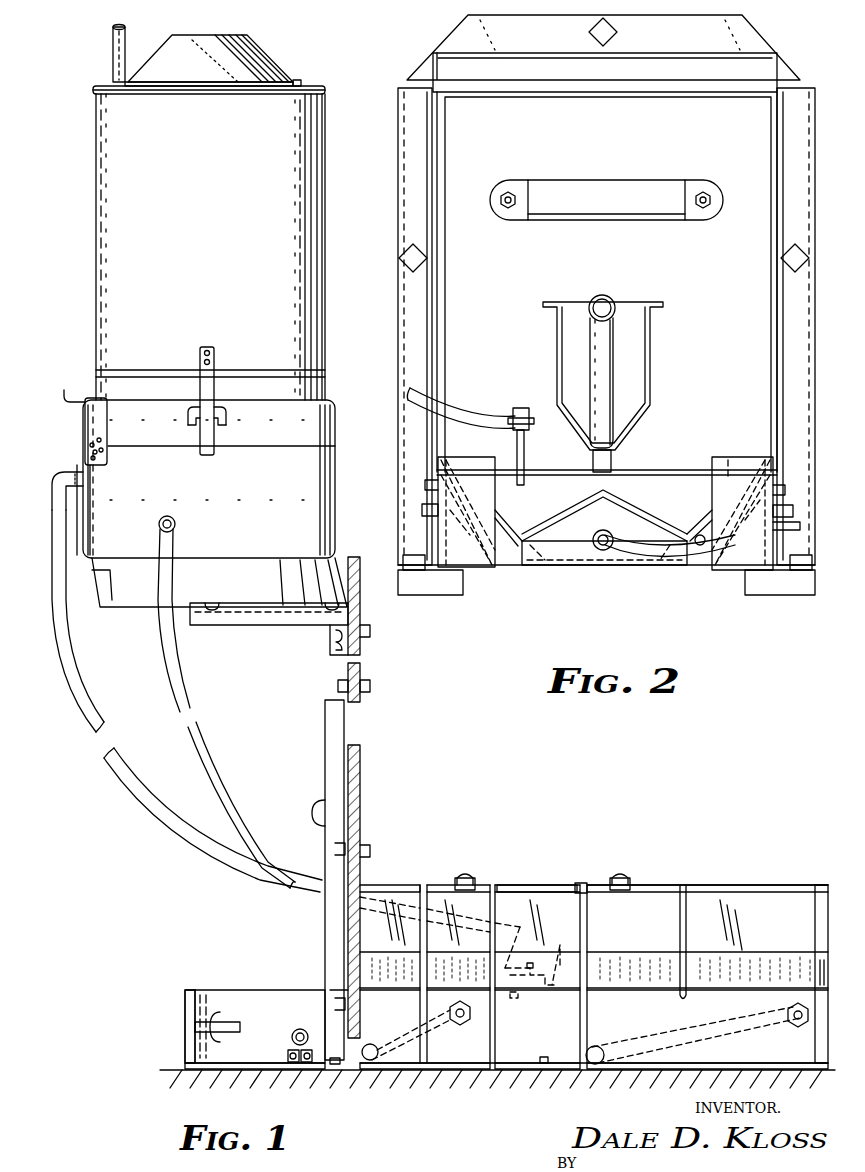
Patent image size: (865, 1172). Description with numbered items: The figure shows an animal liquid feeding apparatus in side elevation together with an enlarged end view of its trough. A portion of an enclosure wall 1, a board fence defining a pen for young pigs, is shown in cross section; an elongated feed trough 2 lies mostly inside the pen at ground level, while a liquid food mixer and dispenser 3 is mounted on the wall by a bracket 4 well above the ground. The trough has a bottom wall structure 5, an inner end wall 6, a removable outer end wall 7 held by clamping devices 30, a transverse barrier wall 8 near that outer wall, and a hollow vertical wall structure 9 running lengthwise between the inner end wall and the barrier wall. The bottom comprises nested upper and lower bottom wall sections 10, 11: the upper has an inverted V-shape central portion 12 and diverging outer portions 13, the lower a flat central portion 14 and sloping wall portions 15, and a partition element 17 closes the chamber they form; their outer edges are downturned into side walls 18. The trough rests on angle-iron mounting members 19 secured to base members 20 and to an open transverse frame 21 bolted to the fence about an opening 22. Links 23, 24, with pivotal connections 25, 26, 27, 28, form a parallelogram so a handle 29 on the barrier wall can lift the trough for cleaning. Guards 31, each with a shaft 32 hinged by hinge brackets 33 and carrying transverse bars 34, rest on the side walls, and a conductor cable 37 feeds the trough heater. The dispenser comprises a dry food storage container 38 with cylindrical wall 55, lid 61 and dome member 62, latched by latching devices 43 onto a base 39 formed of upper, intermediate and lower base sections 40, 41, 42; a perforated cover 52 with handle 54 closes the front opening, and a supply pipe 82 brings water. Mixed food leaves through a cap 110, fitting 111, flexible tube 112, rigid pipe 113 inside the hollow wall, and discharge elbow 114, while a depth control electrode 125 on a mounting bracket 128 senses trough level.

In FIG. 1, the enclosure wall 1 is at (360, 650).
In FIG. 1, the feed trough 2 is at (670, 883).
In FIG. 2, the feed trough 2 is at (600, 570).
In FIG. 1, the liquid animal food mixer and dispenser 3 is at (95, 265).
In FIG. 1, the bracket 4 is at (283, 612).
In FIG. 1, the bottom wall structure 5 is at (300, 988).
In FIG. 2, the bottom wall structure 5 is at (695, 525).
In FIG. 1, the inner end wall 6 is at (815, 926).
In FIG. 1, the outer end wall 7 is at (185, 1013).
In FIG. 2, the outer end wall 7 is at (464, 458).
In FIG. 2, the transverse barrier wall 8 is at (724, 284).
In FIG. 1, the hollow wall structure 9 is at (405, 905).
In FIG. 2, the hollow wall structure 9 is at (652, 350).
In FIG. 2, the upper bottom wall section 10 is at (715, 498).
In FIG. 2, the lower bottom wall section 11 is at (702, 552).
In FIG. 2, the inverted V-shape central portion 12 is at (612, 502).
In FIG. 2, the outwardly diverging outer portions 13 is at (728, 460).
In FIG. 2, the flat central portion 14 is at (562, 566).
In FIG. 2, the sloping wall portions 15 is at (512, 548).
In FIG. 2, the partition element 17 is at (565, 535).
In FIG. 1, the side walls 18 is at (268, 1069).
In FIG. 2, the side walls 18 is at (438, 484).
In FIG. 1, the mounting members 19 is at (428, 1064).
In FIG. 2, the mounting members 19 is at (414, 572).
In FIG. 1, the base members 20 is at (510, 1070).
In FIG. 2, the base members 20 is at (445, 595).
In FIG. 1, the open transverse frame 21 is at (325, 764).
In FIG. 2, the open transverse frame 21 is at (803, 97).
In FIG. 1, the opening 22 is at (356, 702).
In FIG. 1, the mounting links 23 is at (712, 1020).
In FIG. 1, the mounting links 24 is at (412, 1028).
In FIG. 2, the mounting links 24 is at (455, 515).
In FIG. 1, the pivotal connection 25 is at (798, 1003).
In FIG. 1, the pivotal connection 26 is at (598, 1045).
In FIG. 1, the pivotal connection 27 is at (366, 1072).
In FIG. 1, the pivotal connection 28 is at (462, 1000).
In FIG. 1, the handle 29 is at (312, 815).
In FIG. 2, the handle 29 is at (600, 180).
In FIG. 1, the clamping devices 30 is at (226, 1022).
In FIG. 2, the clamping devices 30 is at (422, 509).
In FIG. 1, the guards 31 is at (553, 884).
In FIG. 1, the shaft 32 is at (587, 884).
In FIG. 1, the hinge brackets 33 is at (472, 880).
In FIG. 1, the transverse bars 34 is at (683, 942).
In FIG. 1, the conductor cable 37 is at (300, 1066).
In FIG. 2, the conductor cable 37 is at (700, 560).
In FIG. 1, the dry food storage container 38 is at (327, 167).
In FIG. 1, the base 39 is at (338, 434).
In FIG. 1, the upper base section 40 is at (290, 434).
In FIG. 1, the intermediate base section 41 is at (280, 504).
In FIG. 1, the lower base section 42 is at (274, 589).
In FIG. 1, the latching devices 43 is at (214, 392).
In FIG. 1, the perforated cover 52 is at (88, 450).
In FIG. 1, the handle 54 is at (68, 392).
In FIG. 1, the cylindrical wall 55 is at (305, 271).
In FIG. 1, the cover 61 is at (312, 86).
In FIG. 1, the dome member 62 is at (250, 58).
In FIG. 1, the supply pipe 82 is at (113, 52).
In FIG. 1, the cap 110 is at (86, 540).
In FIG. 1, the fitting 111 is at (52, 474).
In FIG. 1, the flexible tube 112 is at (100, 762).
In FIG. 2, the flexible tube 112 is at (605, 295).
In FIG. 1, the rigid pipe 113 is at (512, 945).
In FIG. 2, the rigid pipe 113 is at (590, 356).
In FIG. 1, the discharge elbow 114 is at (549, 975).
In FIG. 2, the discharge elbow 114 is at (617, 462).
In FIG. 2, the depth control electrode 125 is at (525, 485).
In FIG. 2, the mounting bracket 128 is at (518, 408).